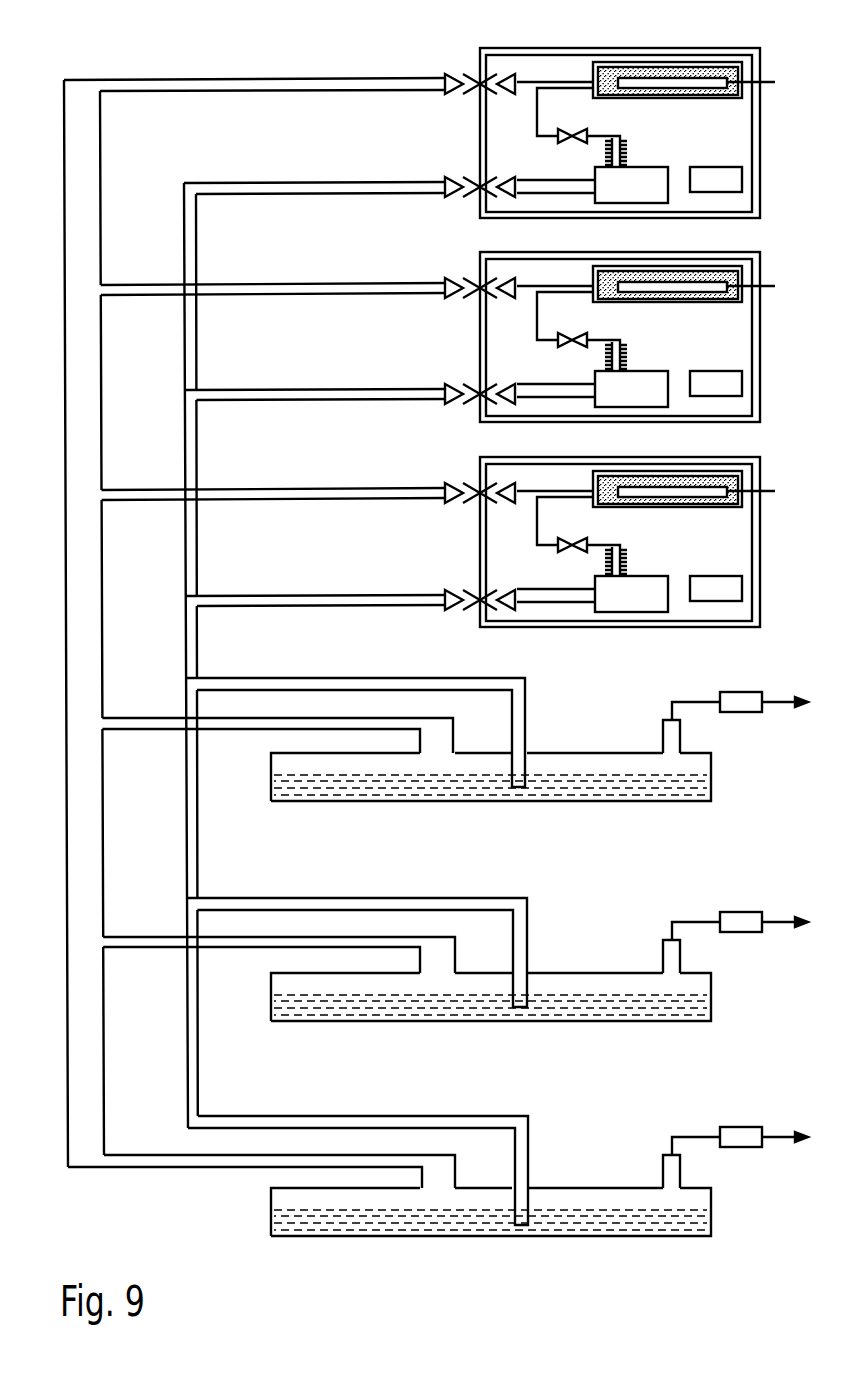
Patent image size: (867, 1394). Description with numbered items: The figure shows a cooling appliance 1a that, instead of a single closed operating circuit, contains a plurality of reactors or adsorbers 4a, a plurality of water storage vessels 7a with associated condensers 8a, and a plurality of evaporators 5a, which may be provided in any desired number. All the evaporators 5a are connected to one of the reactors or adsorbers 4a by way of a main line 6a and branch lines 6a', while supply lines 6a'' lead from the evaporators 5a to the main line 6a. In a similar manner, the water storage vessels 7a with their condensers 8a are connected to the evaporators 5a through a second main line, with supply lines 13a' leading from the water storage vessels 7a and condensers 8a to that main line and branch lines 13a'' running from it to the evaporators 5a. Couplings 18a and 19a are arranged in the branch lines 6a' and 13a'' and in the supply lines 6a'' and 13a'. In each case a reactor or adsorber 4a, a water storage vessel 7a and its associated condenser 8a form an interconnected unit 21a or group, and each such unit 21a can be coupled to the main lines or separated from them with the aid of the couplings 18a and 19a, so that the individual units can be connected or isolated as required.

The appliance 1a is at (106, 64).
The reactor or adsorber 4a is at (690, 70).
The evaporator 5a is at (582, 760).
The main line 6a is at (55, 623).
The branch line 6a' is at (254, 261).
The supply line 6a'' is at (261, 921).
The water storage vessel 7a is at (652, 176).
The condenser 8a is at (625, 147).
The supply line 13a' is at (314, 365).
The branch line 13a'' is at (357, 924).
The coupling 18a is at (465, 82).
The coupling 19a is at (465, 186).
The interconnected unit 21a is at (668, 172).